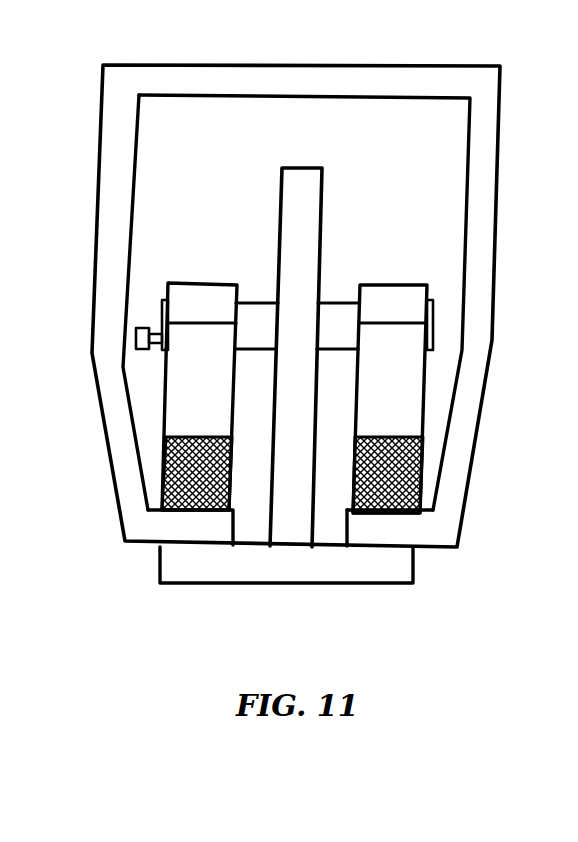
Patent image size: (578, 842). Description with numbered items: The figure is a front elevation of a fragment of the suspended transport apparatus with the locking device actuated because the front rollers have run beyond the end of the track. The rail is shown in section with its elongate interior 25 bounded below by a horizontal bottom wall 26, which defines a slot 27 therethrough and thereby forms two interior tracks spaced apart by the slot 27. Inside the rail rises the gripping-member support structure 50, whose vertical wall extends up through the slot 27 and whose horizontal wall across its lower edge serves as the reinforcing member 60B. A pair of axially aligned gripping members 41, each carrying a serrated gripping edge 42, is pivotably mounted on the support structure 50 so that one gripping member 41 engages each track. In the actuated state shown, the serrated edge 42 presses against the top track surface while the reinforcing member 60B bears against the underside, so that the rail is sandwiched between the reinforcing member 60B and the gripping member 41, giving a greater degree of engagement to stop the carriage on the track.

The elongate interior 25 is at (445, 168).
The horizontal bottom wall 26 is at (412, 527).
The slot 27 is at (327, 527).
The gripping-member support structure 50 is at (293, 240).
The gripping member 41 is at (192, 400).
The serrated gripping edge 42 is at (410, 491).
The reinforcing member 60B is at (208, 570).